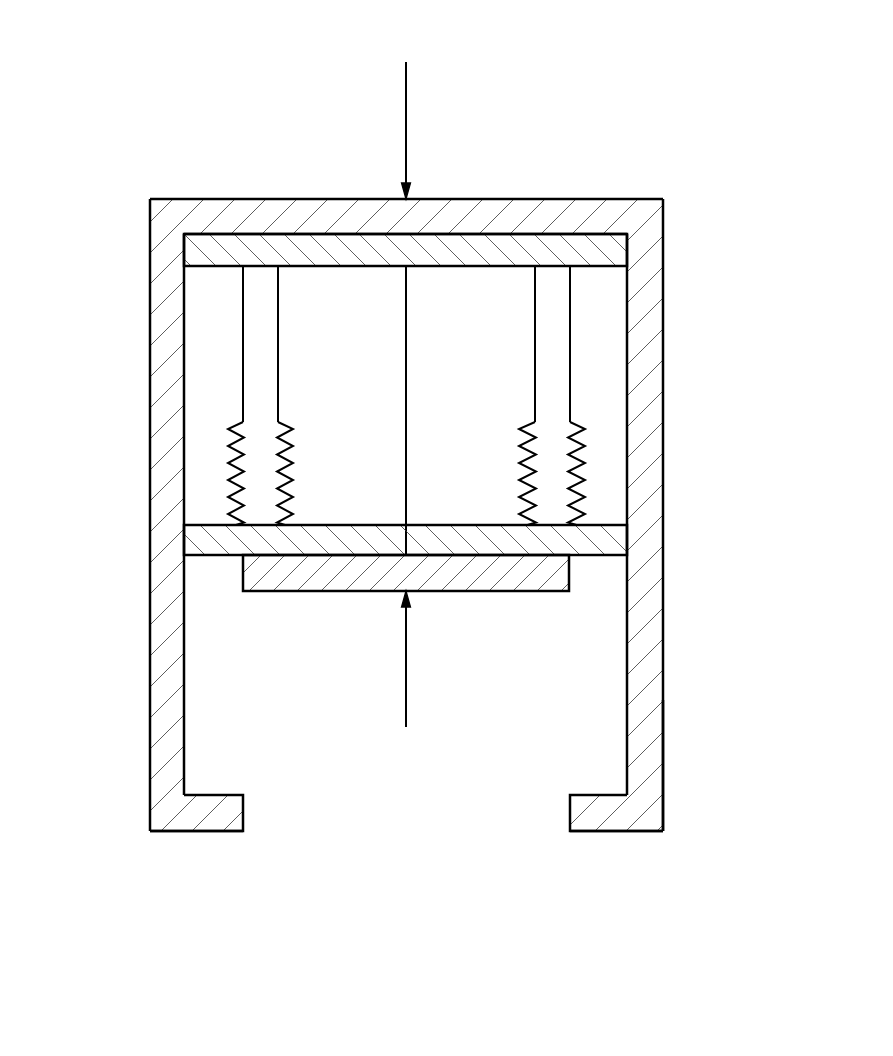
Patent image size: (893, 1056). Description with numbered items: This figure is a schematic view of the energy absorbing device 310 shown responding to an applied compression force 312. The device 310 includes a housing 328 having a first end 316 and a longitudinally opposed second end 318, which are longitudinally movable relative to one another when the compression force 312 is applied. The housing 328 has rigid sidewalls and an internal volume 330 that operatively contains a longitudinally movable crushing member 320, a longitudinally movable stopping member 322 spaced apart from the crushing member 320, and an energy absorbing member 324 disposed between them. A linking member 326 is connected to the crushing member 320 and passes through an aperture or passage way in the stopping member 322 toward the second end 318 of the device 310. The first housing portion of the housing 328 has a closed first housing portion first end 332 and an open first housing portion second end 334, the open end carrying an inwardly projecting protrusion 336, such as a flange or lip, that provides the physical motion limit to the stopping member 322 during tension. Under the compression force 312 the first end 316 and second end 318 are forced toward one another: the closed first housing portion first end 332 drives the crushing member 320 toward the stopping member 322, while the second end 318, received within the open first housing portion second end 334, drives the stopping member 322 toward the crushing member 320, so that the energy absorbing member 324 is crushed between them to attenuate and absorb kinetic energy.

The energy absorbing device 310 is at (410, 523).
The compression force 312 is at (406, 137).
The first end 316 is at (444, 516).
The second end 318 is at (221, 887).
The crushing member 320 is at (195, 250).
The stopping member 322 is at (620, 540).
The energy absorbing member 324 is at (250, 366).
The linking member 326 is at (406, 397).
The housing 328 is at (653, 280).
The internal volume 330 is at (341, 287).
The first housing portion first end 332 is at (615, 199).
The first housing portion second end 334 is at (645, 830).
The protrusion 336 is at (212, 825).